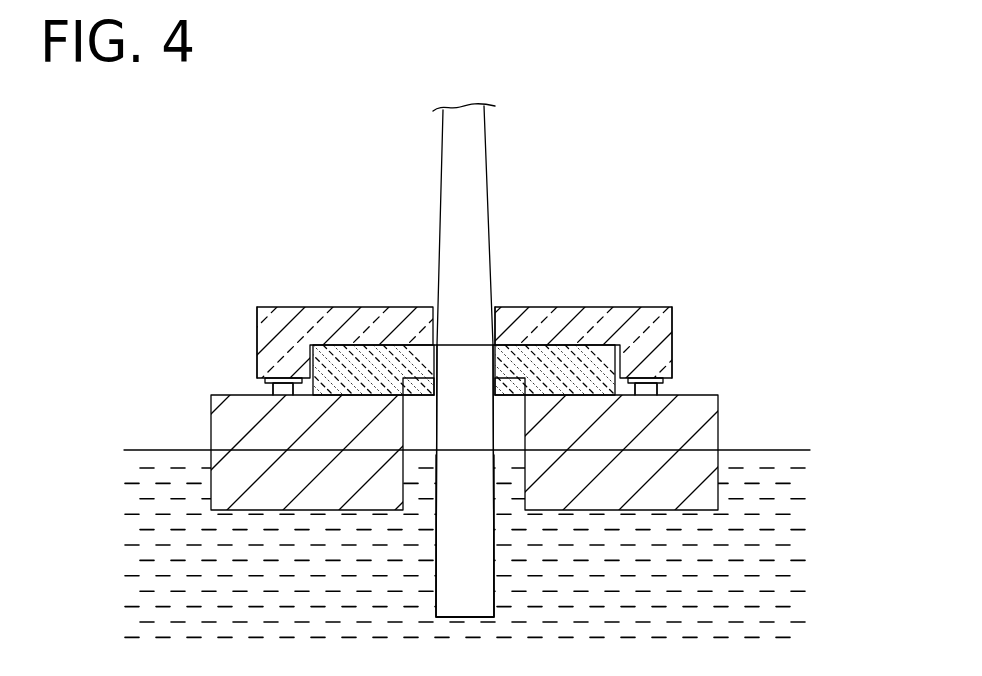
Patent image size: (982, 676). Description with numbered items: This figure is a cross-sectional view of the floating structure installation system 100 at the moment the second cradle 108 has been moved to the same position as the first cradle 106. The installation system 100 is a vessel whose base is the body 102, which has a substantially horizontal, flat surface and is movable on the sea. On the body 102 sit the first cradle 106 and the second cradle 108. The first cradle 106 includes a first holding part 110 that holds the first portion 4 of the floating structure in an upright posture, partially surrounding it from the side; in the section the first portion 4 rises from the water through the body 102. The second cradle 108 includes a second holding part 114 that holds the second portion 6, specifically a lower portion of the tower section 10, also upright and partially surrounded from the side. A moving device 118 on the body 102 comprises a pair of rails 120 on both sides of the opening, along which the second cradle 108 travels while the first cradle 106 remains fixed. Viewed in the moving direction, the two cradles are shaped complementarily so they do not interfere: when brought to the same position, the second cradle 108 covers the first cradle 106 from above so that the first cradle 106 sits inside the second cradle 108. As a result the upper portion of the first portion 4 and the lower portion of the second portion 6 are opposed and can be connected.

The floating structure installation system 100 is at (688, 182).
The body 102 is at (718, 413).
The first cradle 106 is at (573, 346).
The second cradle 108 is at (630, 307).
The first holding part 110 is at (431, 344).
The second holding part 114 is at (500, 293).
The moving device 118 is at (272, 388).
The rails 120 is at (465, 389).
The second portion 6 is at (488, 168).
The tower section 10 is at (465, 481).
The first portion 4 is at (495, 553).